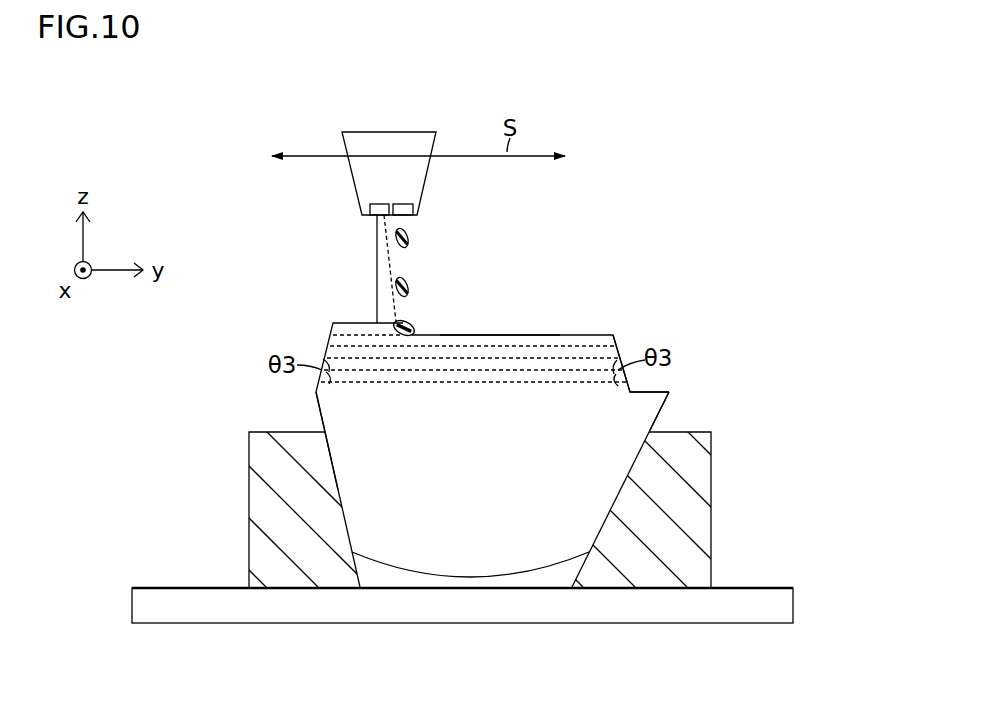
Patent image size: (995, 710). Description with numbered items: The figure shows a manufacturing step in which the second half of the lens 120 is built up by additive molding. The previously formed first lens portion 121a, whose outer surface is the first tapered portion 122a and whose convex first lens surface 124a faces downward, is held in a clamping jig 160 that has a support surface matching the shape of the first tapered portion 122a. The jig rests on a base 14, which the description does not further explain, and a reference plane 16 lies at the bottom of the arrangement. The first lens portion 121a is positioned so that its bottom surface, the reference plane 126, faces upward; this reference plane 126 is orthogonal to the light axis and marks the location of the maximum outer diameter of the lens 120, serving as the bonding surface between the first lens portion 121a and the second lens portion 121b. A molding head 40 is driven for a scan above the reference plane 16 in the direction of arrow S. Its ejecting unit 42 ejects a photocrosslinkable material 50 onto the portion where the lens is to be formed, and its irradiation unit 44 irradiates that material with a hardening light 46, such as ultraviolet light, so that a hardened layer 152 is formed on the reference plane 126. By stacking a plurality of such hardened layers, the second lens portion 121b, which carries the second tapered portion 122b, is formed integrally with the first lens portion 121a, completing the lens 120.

The substrate 14 is at (793, 604).
The reference plane 16 is at (770, 587).
The molding head 40 is at (388, 143).
The ejecting unit 42 is at (403, 204).
The irradiation unit 44 is at (378, 204).
The hardening light 46 is at (377, 262).
The photocrosslinkable material 50 is at (410, 320).
The lens 120 is at (600, 252).
The first lens portion 121a is at (668, 415).
The second lens portion 121b is at (535, 285).
The first tapered portion 122a is at (320, 412).
The second tapered portion 122b is at (615, 335).
The first lens surface 124a is at (397, 567).
The reference plane 126 is at (650, 385).
The hardened layer 152 is at (332, 325).
The clamping jig 160 is at (738, 482).